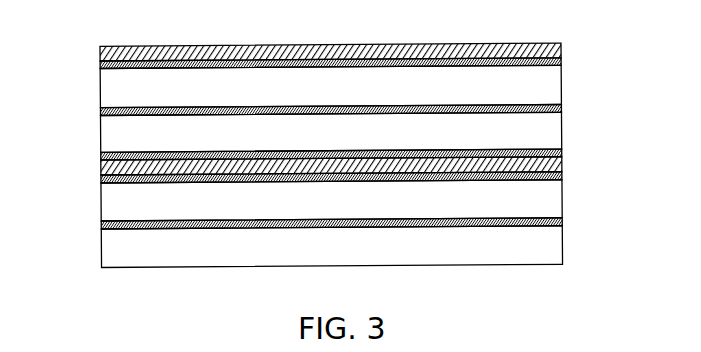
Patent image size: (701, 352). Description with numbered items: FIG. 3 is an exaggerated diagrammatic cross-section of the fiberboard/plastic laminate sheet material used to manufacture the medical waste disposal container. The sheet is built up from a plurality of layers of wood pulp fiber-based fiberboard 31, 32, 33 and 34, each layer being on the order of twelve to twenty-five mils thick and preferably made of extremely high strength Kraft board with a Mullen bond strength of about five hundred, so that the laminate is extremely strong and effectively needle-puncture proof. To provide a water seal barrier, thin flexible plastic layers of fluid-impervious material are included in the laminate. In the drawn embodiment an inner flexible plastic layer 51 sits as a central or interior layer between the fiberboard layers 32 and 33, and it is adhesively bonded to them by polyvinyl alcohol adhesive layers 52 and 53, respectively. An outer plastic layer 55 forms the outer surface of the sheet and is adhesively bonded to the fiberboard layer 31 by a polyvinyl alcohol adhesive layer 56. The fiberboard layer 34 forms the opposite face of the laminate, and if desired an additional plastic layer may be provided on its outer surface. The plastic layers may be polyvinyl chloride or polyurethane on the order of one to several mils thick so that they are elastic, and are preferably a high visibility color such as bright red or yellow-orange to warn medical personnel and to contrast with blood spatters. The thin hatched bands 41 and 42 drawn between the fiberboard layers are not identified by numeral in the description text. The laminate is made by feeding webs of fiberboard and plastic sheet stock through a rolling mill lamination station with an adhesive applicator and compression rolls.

The outer plastic layer 55 is at (561, 50).
The polyvinyl alcohol adhesive layer 56 is at (100, 65).
The fiberboard layer 31 is at (561, 88).
The first internal electrode 41 is at (100, 112).
The fiberboard layer 32 is at (561, 126).
The polyvinyl alcohol adhesive layer 52 is at (100, 157).
The inner flexible plastic layer 51 is at (561, 166).
The polyvinyl alcohol adhesive layer 53 is at (100, 178).
The fiberboard layer 33 is at (561, 203).
The second internal electrode 42 is at (100, 225).
The fiberboard layer 34 is at (561, 249).